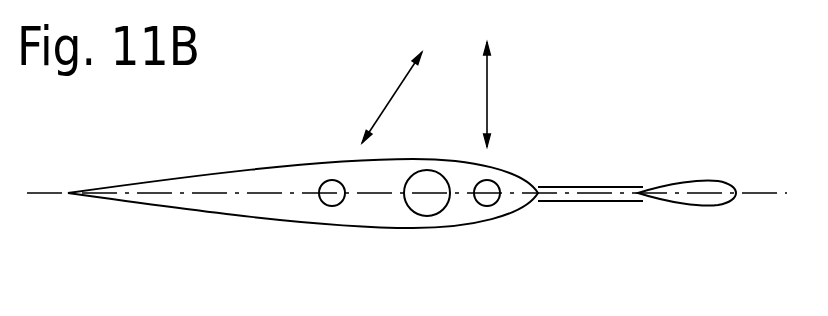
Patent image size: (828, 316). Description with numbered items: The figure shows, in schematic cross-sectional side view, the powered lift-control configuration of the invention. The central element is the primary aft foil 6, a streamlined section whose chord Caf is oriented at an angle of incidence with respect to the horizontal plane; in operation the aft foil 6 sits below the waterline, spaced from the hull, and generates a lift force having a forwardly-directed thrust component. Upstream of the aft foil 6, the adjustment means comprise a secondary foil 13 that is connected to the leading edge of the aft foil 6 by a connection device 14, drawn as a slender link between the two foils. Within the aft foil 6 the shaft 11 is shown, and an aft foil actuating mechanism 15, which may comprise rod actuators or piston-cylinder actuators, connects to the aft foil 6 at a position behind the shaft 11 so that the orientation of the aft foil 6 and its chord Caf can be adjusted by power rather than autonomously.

The aft foil 6 is at (289, 222).
The shaft 11 is at (430, 182).
The secondary foil 13 is at (733, 190).
The connection device 14 is at (608, 192).
The aft foil actuating mechanism 15 is at (488, 92).
The chord of the aft foil Caf is at (260, 195).